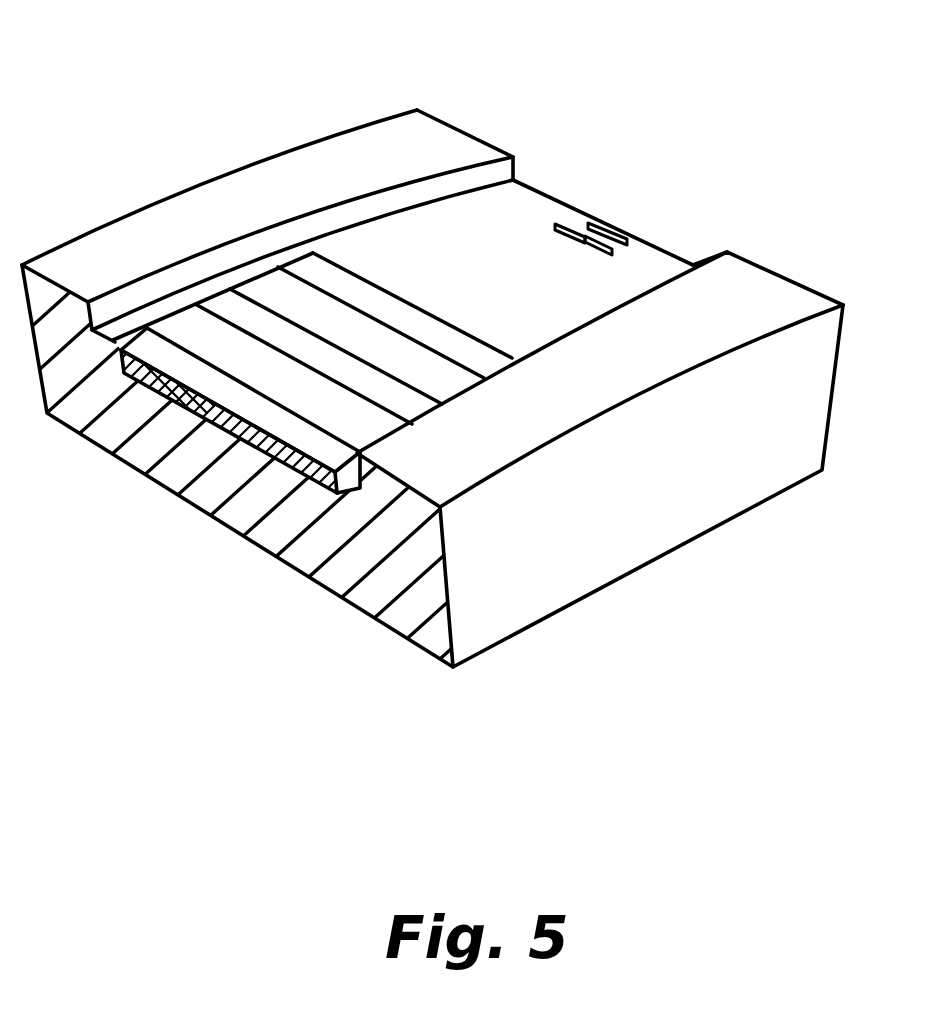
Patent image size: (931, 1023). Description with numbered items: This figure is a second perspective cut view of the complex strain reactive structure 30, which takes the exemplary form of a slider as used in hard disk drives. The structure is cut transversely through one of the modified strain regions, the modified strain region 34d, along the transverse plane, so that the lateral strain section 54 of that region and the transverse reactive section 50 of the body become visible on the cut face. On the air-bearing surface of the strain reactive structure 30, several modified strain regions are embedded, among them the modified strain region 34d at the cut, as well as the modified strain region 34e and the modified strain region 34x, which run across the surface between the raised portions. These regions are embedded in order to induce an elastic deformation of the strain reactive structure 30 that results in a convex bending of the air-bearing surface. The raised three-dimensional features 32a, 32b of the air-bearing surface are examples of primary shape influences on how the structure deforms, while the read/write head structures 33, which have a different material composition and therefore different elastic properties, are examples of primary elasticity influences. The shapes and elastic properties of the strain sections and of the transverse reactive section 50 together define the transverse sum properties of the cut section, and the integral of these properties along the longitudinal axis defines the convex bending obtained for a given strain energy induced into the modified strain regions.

The strain reactive structure 30 is at (733, 452).
The three-dimensional feature 32a is at (438, 147).
The three-dimensional feature 32b is at (758, 306).
The read/write head structures 33 is at (583, 217).
The modified strain region 34d is at (90, 300).
The modified strain region 34e is at (205, 300).
The modified strain region 34x is at (284, 258).
The transverse reactive section 50 is at (374, 584).
The lateral strain section 54 is at (192, 420).